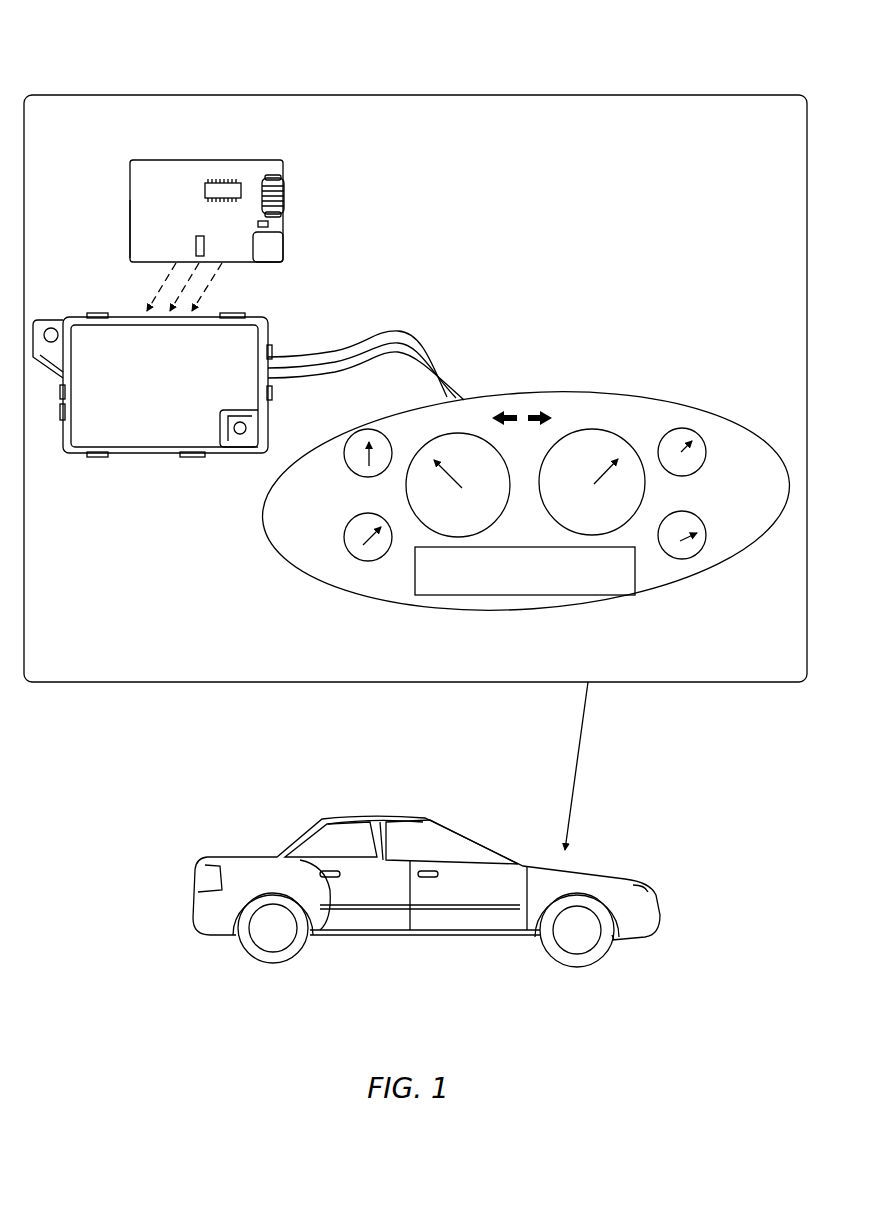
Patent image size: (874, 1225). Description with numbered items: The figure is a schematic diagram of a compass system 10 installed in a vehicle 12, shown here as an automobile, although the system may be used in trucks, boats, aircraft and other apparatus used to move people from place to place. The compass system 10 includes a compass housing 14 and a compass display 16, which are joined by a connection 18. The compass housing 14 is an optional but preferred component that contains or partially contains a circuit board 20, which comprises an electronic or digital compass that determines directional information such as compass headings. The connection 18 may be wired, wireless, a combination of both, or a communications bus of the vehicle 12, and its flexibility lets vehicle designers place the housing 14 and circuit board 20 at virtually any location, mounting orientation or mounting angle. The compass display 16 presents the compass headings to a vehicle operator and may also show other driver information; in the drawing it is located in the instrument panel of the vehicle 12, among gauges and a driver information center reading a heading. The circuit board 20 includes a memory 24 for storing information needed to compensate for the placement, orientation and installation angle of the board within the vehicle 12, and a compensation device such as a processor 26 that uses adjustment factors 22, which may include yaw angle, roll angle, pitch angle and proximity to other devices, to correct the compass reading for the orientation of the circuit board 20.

The compass system 10 is at (194, 78).
The vehicle 12 is at (426, 838).
The compass housing 14 is at (152, 423).
The compass display 16 is at (526, 519).
The connection 18 is at (366, 344).
The circuit board 20 is at (206, 212).
The adjustment factors 22 is at (268, 246).
The memory 24 is at (266, 256).
The processor 26 is at (130, 248).